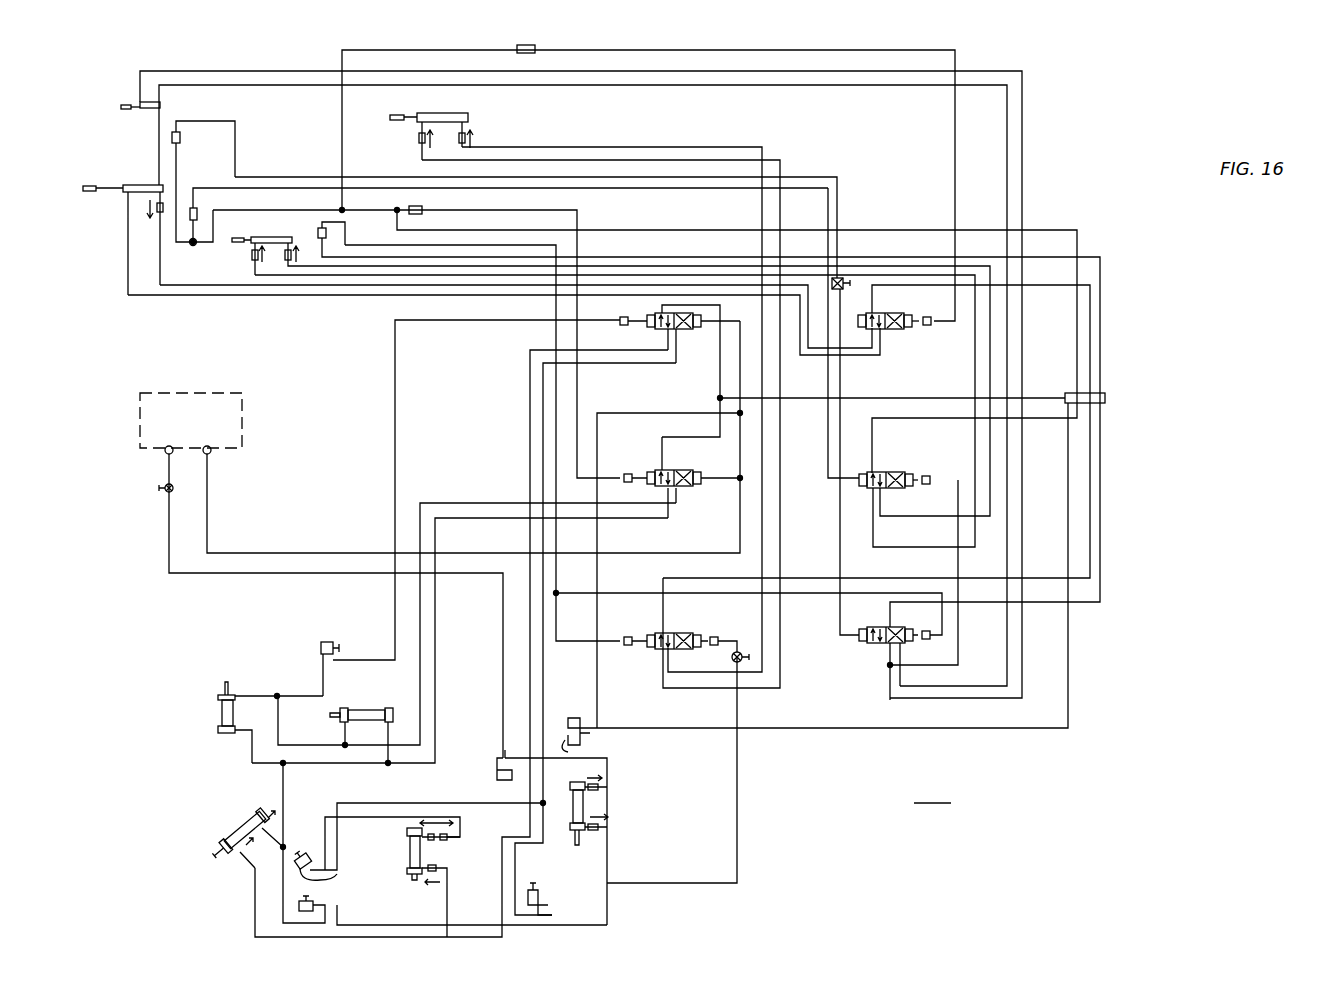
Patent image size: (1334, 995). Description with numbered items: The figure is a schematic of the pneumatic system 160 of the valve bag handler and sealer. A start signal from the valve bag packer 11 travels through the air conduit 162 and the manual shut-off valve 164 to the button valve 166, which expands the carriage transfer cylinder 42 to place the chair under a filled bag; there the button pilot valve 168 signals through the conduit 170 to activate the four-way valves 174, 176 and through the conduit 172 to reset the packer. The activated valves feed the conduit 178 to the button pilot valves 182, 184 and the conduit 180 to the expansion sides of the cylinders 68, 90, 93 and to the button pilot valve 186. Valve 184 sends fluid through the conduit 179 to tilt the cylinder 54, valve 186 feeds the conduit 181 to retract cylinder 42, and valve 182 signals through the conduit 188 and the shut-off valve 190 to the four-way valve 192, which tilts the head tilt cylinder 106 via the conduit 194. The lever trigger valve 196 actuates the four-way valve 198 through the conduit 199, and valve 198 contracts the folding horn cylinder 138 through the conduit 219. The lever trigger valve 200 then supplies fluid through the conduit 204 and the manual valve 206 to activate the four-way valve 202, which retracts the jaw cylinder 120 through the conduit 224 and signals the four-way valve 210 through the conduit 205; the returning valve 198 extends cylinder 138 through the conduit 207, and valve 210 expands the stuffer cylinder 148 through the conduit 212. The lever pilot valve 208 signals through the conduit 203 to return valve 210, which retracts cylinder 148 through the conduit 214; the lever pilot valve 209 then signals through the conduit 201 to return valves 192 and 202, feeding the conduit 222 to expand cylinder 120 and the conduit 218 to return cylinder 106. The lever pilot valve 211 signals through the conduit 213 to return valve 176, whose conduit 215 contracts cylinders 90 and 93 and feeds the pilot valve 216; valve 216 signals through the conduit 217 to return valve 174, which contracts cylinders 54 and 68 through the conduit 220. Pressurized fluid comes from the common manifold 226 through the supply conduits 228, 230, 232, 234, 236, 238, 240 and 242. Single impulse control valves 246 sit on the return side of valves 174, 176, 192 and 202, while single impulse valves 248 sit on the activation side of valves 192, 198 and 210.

The valve bag packer 11 is at (216, 385).
The carriage transfer cylinder 42 is at (588, 800).
The cylinder 54 is at (423, 856).
The bag lift cylinder 68 is at (232, 828).
The fluid cylinder 90 is at (382, 690).
The fluid cylinder 93 is at (216, 712).
The head tilt cylinder 106 is at (450, 113).
The jaw cylinder 120 is at (150, 109).
The folding horn cylinder 138 is at (143, 184).
The stuffer cylinder 148 is at (270, 246).
The pneumatic system 160 is at (932, 793).
The air conduit 162 is at (283, 574).
The manual shut-off valve 164 is at (163, 494).
The button valve 166 is at (496, 778).
The button pilot valve 168 is at (583, 743).
The conduit 170 is at (662, 412).
The conduit 172 is at (283, 553).
The four-way valve 174 is at (672, 330).
The four-way valve 176 is at (712, 460).
The conduit 178 is at (544, 694).
The conduit 179 is at (325, 824).
The conduit 180 is at (437, 642).
The conduit 181 is at (607, 912).
The button pilot valve 182 is at (548, 906).
The button pilot valve 184 is at (313, 865).
The button pilot valve 186 is at (316, 903).
The conduit 188 is at (739, 782).
The shut-off valve 190 is at (748, 658).
The four-way valve 192 is at (676, 632).
The conduit 194 is at (764, 462).
The lever trigger valve 196 is at (526, 54).
The four-way valve 198 is at (882, 330).
The conduit 199 is at (628, 52).
The lever trigger valve 200 is at (180, 131).
The conduit 201 is at (558, 574).
The four-way valve 202 is at (872, 646).
The conduit 203 is at (828, 440).
The conduit 204 is at (823, 178).
The conduit 205 is at (952, 566).
The manual valve 206 is at (845, 276).
The conduit 207 is at (322, 262).
The lever pilot valve 208 is at (190, 206).
The lever pilot valve 209 is at (306, 268).
The four-way valve 210 is at (884, 490).
The lever pilot valve 211 is at (414, 205).
The conduit 212 is at (992, 457).
The conduit 213 is at (582, 210).
The conduit 214 is at (935, 548).
The conduit 215 is at (492, 504).
The pilot valve 216 is at (322, 640).
The conduit 217 is at (393, 452).
The conduit 218 is at (784, 552).
The conduit 219 is at (178, 300).
The conduit 220 is at (528, 700).
The conduit 222 is at (300, 84).
The conduit 224 is at (222, 66).
The common manifold 226 is at (1100, 393).
The fluid supply conduit 228 is at (1103, 262).
The fluid supply conduit 230 is at (1051, 224).
The fluid supply conduit 232 is at (1092, 320).
The fluid supply conduit 234 is at (1040, 397).
The fluid supply conduit 236 is at (1040, 420).
The line 238 is at (1070, 507).
The fluid supply conduit 240 is at (1092, 540).
The fluid supply conduit 242 is at (1103, 582).
The single impulse control valve 246 is at (628, 330).
The single impulse valve 248 is at (928, 328).